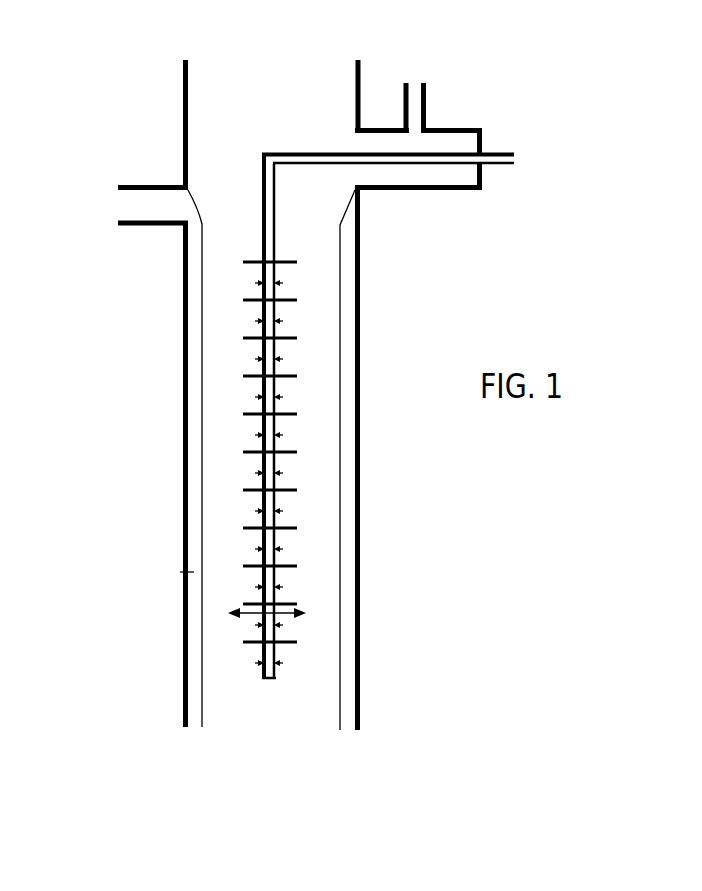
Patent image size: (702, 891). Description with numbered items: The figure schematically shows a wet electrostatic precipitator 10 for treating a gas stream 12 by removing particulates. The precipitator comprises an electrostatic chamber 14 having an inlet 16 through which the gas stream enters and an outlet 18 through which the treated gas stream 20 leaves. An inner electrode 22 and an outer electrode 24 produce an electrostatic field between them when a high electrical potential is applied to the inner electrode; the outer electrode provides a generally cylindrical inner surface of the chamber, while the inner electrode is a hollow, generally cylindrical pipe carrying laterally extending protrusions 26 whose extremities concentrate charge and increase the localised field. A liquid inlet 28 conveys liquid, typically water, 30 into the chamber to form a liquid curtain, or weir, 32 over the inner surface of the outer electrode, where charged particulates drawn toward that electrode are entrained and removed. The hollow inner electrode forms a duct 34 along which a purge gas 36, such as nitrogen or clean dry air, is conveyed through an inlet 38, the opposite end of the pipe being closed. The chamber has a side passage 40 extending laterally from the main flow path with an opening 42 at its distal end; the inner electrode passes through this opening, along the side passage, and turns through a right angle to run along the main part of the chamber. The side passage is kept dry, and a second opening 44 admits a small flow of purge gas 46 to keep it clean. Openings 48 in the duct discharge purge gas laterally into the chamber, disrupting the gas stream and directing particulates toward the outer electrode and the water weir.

The wet electrostatic precipitator 10 is at (128, 467).
The gas stream 12 is at (268, 760).
The electrostatic chamber 14 is at (320, 356).
The inlet 16 is at (361, 706).
The outlet 18 is at (183, 73).
The treated gas stream 20 is at (270, 122).
The inner electrode 22 is at (268, 480).
The outer electrode 24 is at (183, 378).
The protrusions 26 is at (293, 527).
The liquid inlet 28 is at (136, 226).
The liquid 30 is at (125, 205).
The liquid curtain 32 is at (183, 573).
The duct 34 is at (270, 231).
The purge gas 36 is at (525, 160).
The inlet 38 is at (498, 165).
The side passage 40 is at (445, 192).
The opening 42 is at (483, 150).
The second opening 44 is at (427, 112).
The purge gas 46 is at (412, 77).
The opening 48 is at (262, 617).